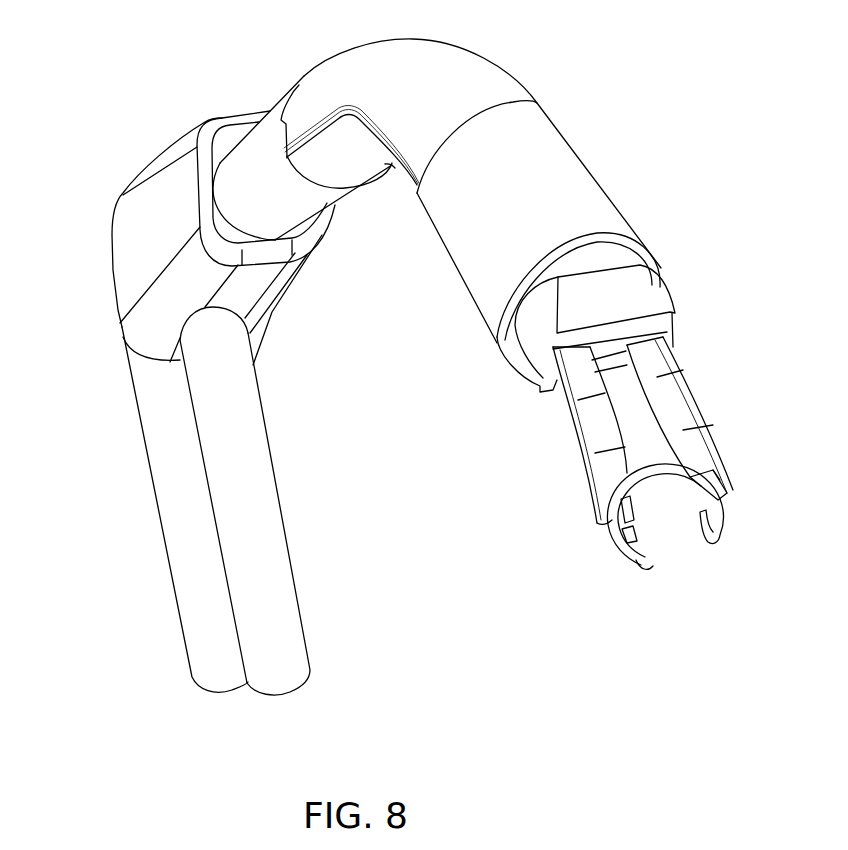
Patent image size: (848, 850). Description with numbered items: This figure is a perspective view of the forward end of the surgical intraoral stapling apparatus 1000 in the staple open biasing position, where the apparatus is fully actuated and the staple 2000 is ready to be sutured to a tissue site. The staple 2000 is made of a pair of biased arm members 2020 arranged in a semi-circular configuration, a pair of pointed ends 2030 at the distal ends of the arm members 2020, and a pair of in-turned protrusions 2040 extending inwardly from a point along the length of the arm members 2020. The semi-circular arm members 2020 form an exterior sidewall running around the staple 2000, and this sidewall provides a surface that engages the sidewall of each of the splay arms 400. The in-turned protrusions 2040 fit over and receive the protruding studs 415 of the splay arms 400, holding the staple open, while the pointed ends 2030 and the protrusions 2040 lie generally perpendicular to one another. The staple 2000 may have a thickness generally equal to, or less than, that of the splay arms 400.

The surgical intraoral stapling apparatus 1000 is at (418, 361).
The splay arms 400 is at (695, 400).
The protruding studs 415 is at (617, 499).
The staple 2000 is at (615, 556).
The biased arm members 2020 is at (610, 538).
The pointed ends 2030 is at (651, 604).
The in-turned protrusions 2040 is at (640, 535).